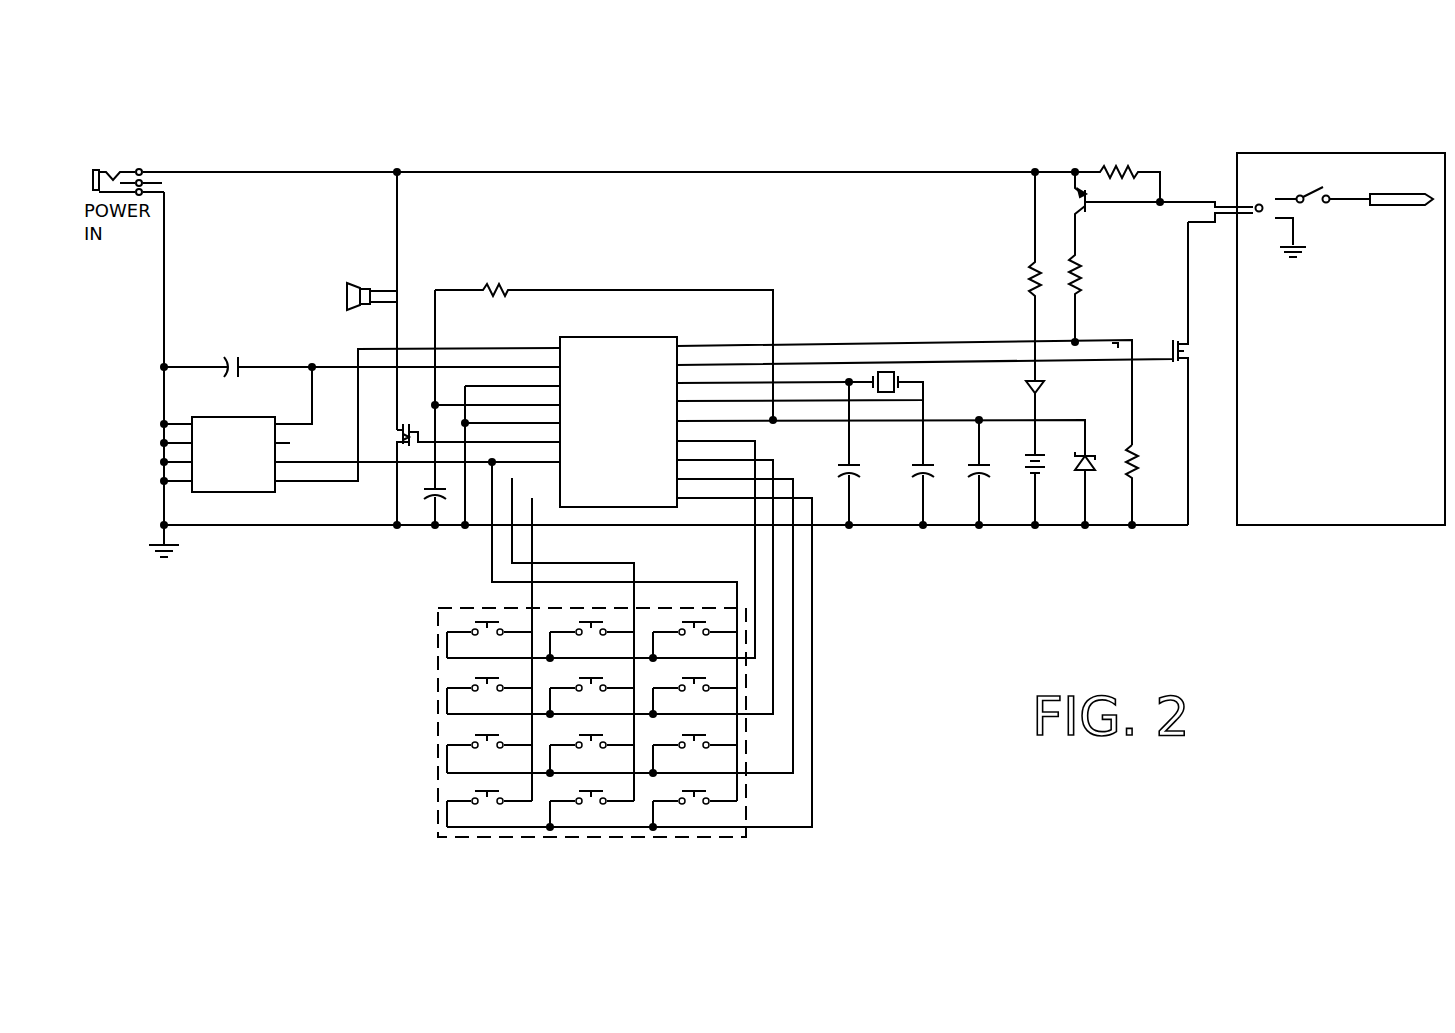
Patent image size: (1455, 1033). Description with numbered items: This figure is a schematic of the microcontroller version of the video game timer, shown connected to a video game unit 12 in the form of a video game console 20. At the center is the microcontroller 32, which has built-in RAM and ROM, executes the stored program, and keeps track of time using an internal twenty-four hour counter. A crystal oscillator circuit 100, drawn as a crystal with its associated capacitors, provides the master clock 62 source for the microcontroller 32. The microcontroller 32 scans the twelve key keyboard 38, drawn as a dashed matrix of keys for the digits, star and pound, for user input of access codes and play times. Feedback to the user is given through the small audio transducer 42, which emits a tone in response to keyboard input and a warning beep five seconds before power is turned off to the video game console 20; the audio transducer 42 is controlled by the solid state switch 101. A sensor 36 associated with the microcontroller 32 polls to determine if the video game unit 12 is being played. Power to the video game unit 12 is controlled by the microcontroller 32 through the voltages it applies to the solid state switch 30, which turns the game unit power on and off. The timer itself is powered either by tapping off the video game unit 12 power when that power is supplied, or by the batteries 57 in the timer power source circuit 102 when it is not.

The video game unit 12 is at (1341, 309).
The video game console 20 is at (1355, 153).
The solid state switch 30 is at (1189, 360).
The microcontroller 32 is at (655, 337).
The sensor 36 is at (1120, 168).
The twelve key keyboard 38 is at (830, 712).
The audio transducer 42 is at (398, 291).
The batteries 57 is at (1071, 522).
The master clock 62 is at (926, 566).
The crystal oscillator circuit 100 is at (937, 535).
The solid state switch 101 is at (400, 438).
The timer power source circuit 102 is at (1043, 381).